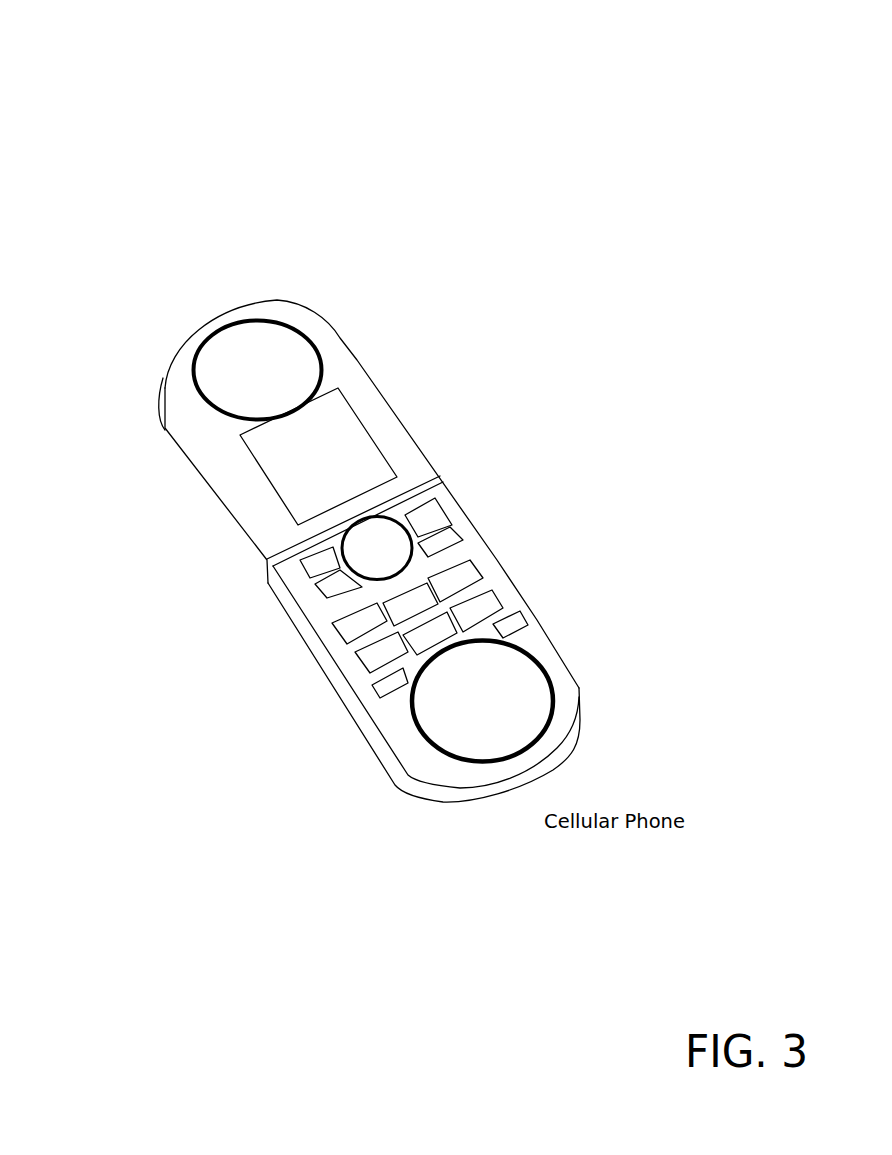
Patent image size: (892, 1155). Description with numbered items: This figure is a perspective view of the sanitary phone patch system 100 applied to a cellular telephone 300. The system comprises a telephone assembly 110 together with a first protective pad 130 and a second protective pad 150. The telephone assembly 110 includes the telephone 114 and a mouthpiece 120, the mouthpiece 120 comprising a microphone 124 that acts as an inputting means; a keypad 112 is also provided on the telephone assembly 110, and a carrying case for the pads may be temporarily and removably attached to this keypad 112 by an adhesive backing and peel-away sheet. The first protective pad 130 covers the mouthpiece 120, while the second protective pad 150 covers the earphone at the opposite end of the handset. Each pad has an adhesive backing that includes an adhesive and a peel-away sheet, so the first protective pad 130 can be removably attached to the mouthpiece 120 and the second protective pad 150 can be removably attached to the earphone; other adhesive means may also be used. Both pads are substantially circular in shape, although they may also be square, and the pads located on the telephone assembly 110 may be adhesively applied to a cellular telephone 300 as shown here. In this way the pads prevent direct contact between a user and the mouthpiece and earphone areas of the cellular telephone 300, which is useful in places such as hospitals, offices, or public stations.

The sanitary phone patch system 100 is at (647, 105).
The telephone assembly 110 is at (667, 169).
The keypad 112 is at (455, 530).
The telephone 114 is at (261, 616).
The mouthpiece 120 is at (517, 664).
The microphone 124 is at (429, 741).
The first protective pad 130 is at (537, 700).
The second protective pad 150 is at (280, 335).
The cellular telephone 300 is at (170, 470).